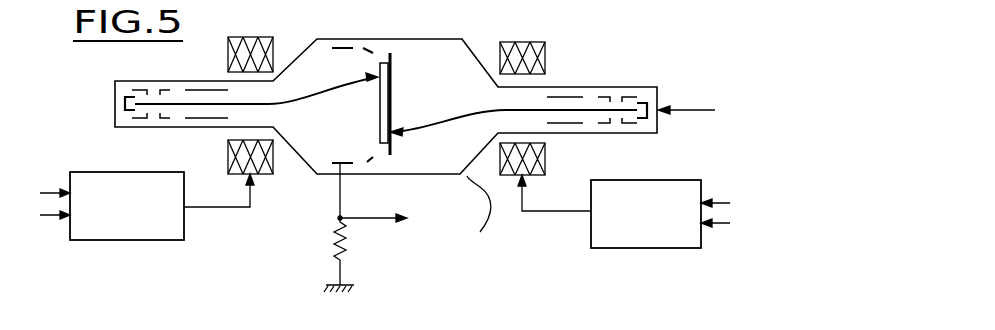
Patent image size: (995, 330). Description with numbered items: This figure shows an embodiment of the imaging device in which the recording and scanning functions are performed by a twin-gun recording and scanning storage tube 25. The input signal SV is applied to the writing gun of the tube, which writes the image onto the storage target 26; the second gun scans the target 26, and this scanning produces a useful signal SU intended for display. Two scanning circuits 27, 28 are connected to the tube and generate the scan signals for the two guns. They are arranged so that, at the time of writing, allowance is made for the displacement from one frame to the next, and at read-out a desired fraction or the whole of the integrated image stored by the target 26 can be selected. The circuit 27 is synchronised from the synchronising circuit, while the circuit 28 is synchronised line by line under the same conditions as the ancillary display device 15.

The twin-gun recording and scanning storage tube 25 is at (427, 39).
The target 26 is at (380, 106).
The circuit 27 is at (618, 248).
The circuit 28 is at (110, 172).
The ancillary display device 15 is at (482, 239).
The useful signal SU is at (372, 215).
The signal SV is at (688, 108).